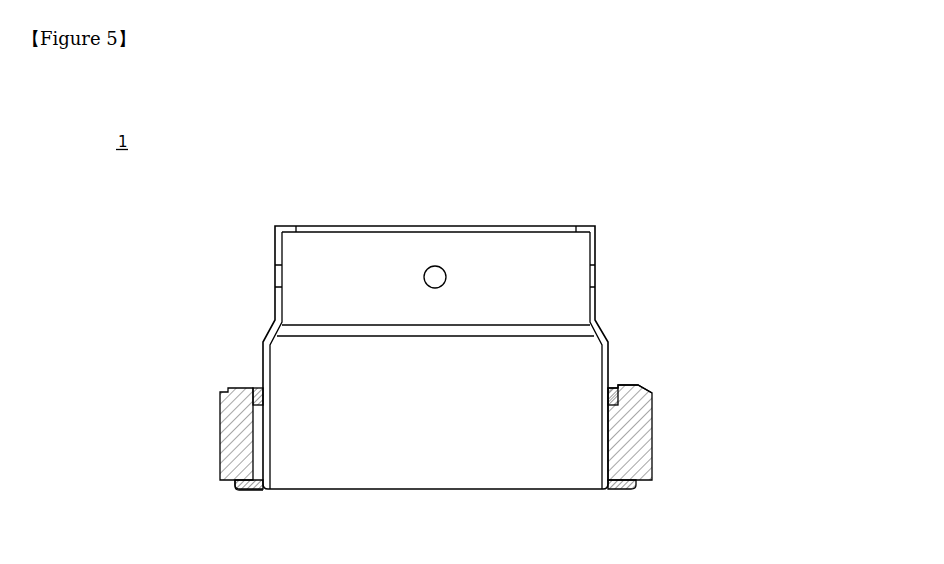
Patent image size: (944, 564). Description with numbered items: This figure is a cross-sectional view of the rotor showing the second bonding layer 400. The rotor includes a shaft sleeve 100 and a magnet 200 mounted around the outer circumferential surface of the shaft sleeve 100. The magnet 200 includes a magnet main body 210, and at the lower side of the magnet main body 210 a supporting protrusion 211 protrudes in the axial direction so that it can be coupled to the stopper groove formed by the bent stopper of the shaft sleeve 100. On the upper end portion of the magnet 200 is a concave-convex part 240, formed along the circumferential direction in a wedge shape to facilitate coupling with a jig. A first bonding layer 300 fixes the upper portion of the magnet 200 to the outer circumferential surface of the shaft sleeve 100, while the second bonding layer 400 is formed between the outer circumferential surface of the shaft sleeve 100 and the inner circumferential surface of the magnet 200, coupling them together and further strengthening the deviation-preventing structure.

The shaft sleeve 100 is at (610, 308).
The magnet 200 is at (670, 433).
The magnet main body 210 is at (220, 432).
The supporting protrusion 211 is at (257, 491).
The concave-convex part 240 is at (640, 385).
The first bonding layer 300 is at (255, 385).
The second bonding layer 400 is at (263, 450).